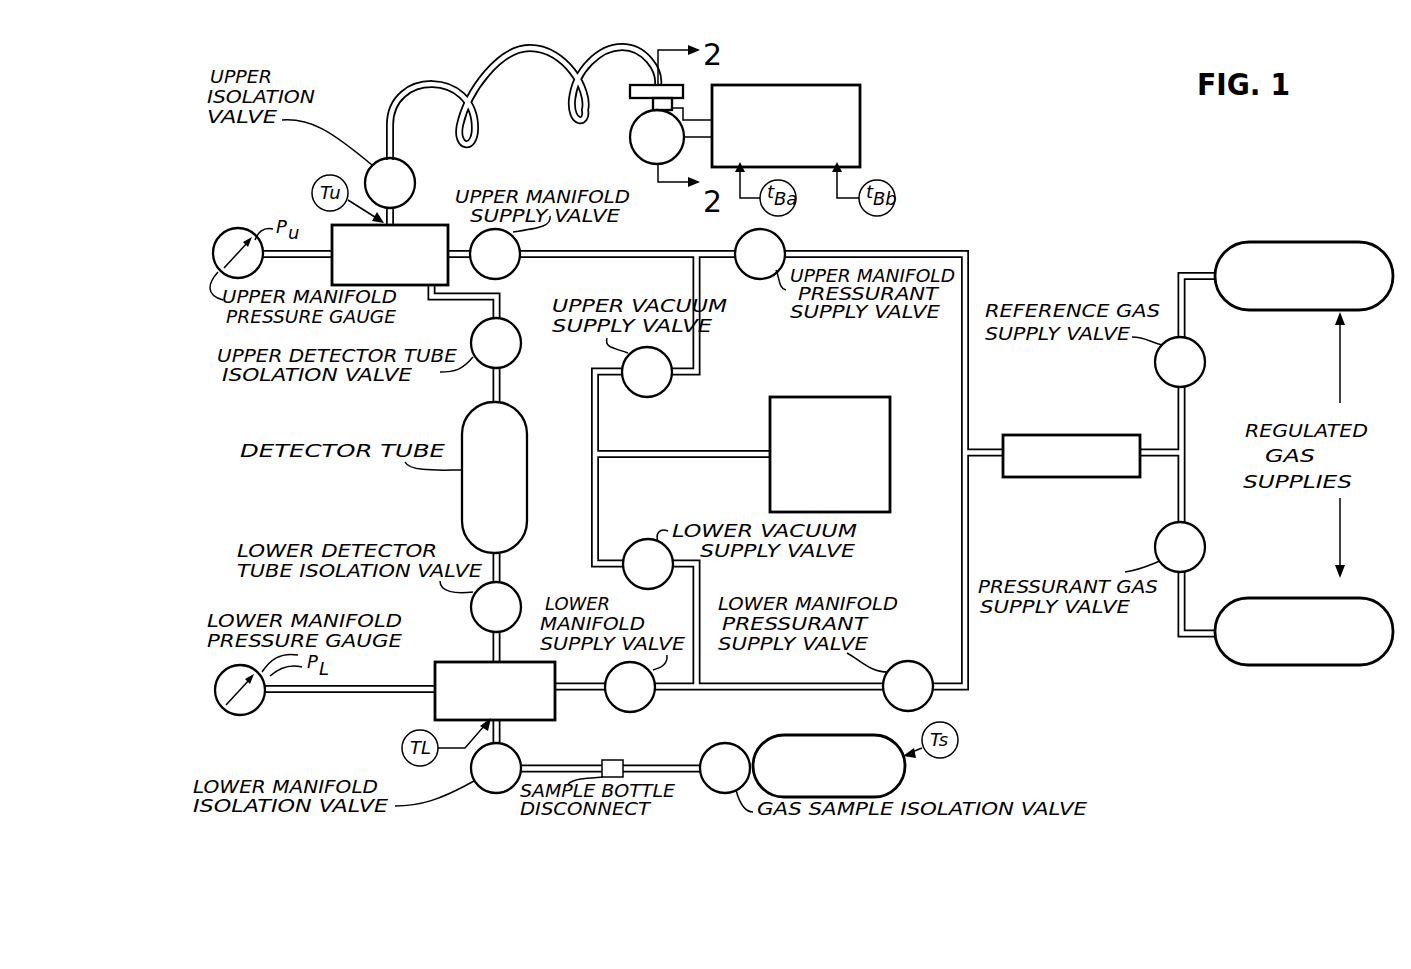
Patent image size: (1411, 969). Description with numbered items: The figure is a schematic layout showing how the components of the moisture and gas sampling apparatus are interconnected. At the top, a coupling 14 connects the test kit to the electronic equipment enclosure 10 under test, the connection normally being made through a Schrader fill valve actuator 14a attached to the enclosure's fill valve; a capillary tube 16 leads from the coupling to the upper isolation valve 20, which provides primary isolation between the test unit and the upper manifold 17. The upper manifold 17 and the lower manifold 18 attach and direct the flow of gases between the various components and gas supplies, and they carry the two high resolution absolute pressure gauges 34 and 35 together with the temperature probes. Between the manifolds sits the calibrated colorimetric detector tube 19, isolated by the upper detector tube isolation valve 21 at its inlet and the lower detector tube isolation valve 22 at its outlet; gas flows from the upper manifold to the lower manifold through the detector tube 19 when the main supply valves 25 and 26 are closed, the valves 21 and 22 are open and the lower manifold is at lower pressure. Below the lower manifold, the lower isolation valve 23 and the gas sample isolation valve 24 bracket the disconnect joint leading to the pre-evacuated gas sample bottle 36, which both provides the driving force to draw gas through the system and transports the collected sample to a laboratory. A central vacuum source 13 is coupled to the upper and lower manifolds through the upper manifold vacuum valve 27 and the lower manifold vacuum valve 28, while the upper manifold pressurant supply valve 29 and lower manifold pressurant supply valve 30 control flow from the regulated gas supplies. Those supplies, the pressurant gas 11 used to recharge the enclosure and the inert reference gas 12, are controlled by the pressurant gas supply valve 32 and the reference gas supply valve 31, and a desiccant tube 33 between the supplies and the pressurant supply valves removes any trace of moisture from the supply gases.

The electronic equipment enclosure 10 is at (860, 120).
The pressurant gas supply 11 is at (1360, 667).
The reference gas supply 12 is at (1332, 242).
The vacuum source 13 is at (850, 397).
The coupling 14 is at (631, 135).
The Schrader fill valve actuator 14a is at (697, 135).
The capillary tube 16 is at (547, 57).
The upper manifold 17 is at (413, 225).
The lower manifold 18 is at (435, 698).
The detector tube 19 is at (540, 420).
The upper isolation valve 20 is at (407, 166).
The upper detector tube isolation valve 21 is at (519, 355).
The lower detector tube isolation valve 22 is at (515, 593).
The lower isolation valve 23 is at (513, 755).
The gas sample isolation valve 24 is at (735, 743).
The upper manifold main supply valve 25 is at (519, 262).
The lower manifold main supply valve 26 is at (650, 705).
The upper manifold vacuum valve 27 is at (662, 391).
The lower manifold vacuum valve 28 is at (638, 541).
The upper manifold pressurant supply valve 29 is at (783, 240).
The lower manifold pressurant supply valve 30 is at (917, 661).
The reference gas supply valve 31 is at (1206, 352).
The pressurant gas supply valve 32 is at (1198, 530).
The desiccant tube 33 is at (1045, 435).
The upper manifold pressure gauge 34 is at (243, 229).
The lower manifold pressure gauge 35 is at (256, 712).
The gas sample bottle 36 is at (827, 735).